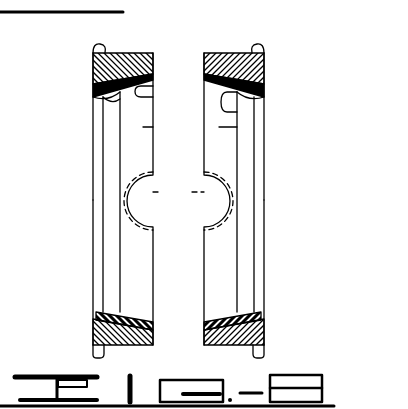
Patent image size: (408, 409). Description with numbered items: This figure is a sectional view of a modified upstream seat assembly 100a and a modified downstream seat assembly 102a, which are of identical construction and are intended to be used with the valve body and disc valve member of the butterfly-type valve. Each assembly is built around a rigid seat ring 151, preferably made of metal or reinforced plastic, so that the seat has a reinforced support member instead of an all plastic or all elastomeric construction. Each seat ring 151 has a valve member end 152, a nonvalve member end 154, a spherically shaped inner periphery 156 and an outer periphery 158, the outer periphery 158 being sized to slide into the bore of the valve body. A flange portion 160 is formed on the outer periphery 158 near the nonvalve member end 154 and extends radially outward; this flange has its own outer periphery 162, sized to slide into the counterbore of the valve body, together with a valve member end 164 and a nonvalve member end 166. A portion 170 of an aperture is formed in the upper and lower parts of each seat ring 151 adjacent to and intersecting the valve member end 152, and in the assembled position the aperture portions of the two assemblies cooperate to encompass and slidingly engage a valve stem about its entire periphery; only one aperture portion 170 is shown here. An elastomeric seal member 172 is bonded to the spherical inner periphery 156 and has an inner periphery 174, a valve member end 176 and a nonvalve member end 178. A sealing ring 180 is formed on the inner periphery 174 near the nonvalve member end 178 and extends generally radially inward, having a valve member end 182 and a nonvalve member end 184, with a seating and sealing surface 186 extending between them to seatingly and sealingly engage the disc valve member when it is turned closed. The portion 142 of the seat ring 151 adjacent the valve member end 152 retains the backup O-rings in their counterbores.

The modified upstream seat assembly 100a is at (124, 33).
The modified downstream seat assembly 102a is at (231, 33).
The portion of seat ring 142 is at (203, 54).
The rigid seat ring 151 is at (204, 355).
The valve member end 152 is at (204, 337).
The nonvalve member end 154 is at (93, 76).
The inner periphery 156 is at (204, 293).
The outer periphery 158 is at (134, 56).
The flange portion 160 is at (95, 352).
The outer periphery 162 is at (93, 57).
The valve member end 164 is at (104, 47).
The nonvalve member end 166 is at (94, 338).
The aperture portion 170 is at (178, 199).
The elastomeric seal member 172 is at (204, 313).
The inner periphery 174 is at (203, 93).
The valve member end 176 is at (203, 76).
The nonvalve member end 178 is at (263, 95).
The sealing ring 180 is at (99, 311).
The valve member end 182 is at (112, 98).
The nonvalve member end 184 is at (100, 87).
The seating and sealing surface 186 is at (113, 310).